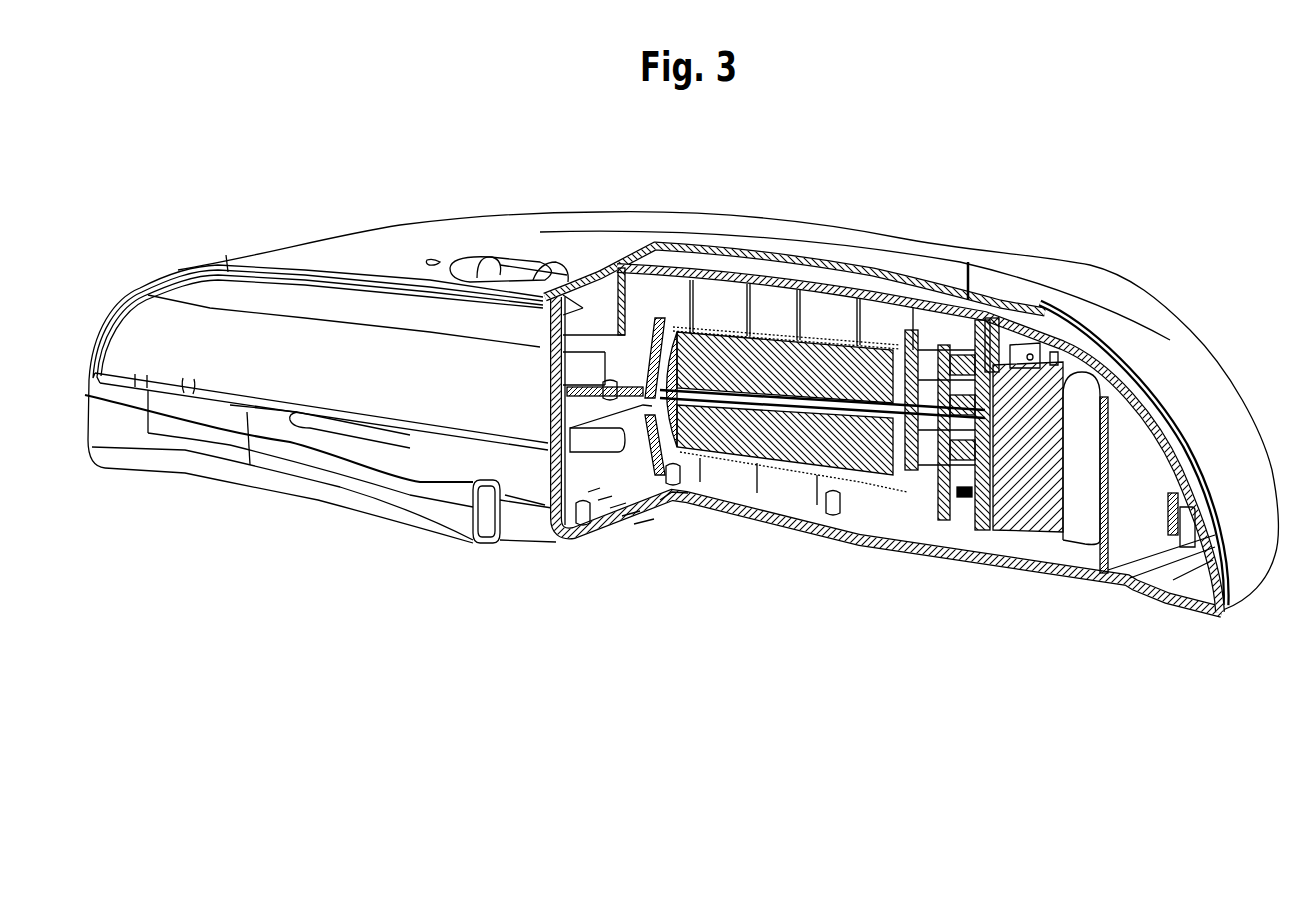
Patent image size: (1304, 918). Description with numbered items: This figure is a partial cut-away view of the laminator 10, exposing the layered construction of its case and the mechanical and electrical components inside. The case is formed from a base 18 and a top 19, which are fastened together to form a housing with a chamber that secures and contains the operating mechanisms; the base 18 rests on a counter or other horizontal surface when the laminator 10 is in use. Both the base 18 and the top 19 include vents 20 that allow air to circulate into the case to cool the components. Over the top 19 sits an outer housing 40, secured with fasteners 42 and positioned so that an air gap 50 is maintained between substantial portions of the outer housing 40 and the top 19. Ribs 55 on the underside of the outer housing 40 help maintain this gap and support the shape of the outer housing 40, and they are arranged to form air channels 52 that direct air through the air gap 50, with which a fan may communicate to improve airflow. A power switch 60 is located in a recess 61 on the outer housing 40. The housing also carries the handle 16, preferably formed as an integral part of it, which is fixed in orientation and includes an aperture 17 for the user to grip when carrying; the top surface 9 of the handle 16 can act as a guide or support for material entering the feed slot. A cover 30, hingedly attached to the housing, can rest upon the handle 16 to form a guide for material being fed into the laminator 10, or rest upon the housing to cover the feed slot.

The laminator 10 is at (948, 168).
The cover 30 is at (195, 313).
The outer housing 40 is at (740, 233).
The fasteners 42 is at (427, 260).
The power switch 60 is at (503, 256).
The recess 61 is at (588, 278).
The ribs 55 is at (605, 275).
The air channels 52 is at (640, 272).
The top 19 is at (905, 265).
The air gap 50 is at (1003, 312).
The top surface 9 is at (330, 457).
The handle 16 is at (380, 497).
The aperture 17 is at (515, 506).
The vents 20 is at (673, 497).
The base 18 is at (1018, 555).